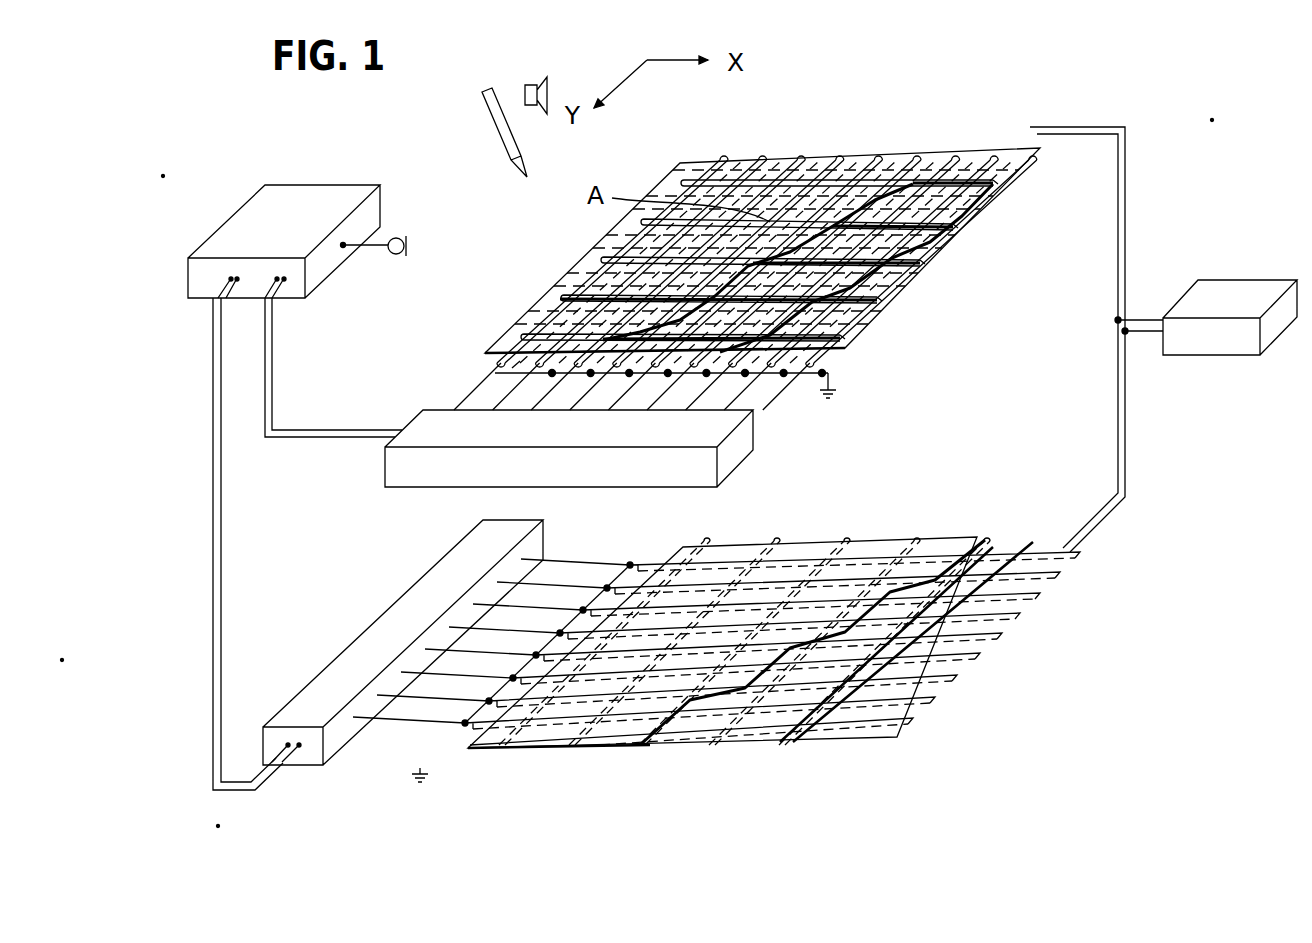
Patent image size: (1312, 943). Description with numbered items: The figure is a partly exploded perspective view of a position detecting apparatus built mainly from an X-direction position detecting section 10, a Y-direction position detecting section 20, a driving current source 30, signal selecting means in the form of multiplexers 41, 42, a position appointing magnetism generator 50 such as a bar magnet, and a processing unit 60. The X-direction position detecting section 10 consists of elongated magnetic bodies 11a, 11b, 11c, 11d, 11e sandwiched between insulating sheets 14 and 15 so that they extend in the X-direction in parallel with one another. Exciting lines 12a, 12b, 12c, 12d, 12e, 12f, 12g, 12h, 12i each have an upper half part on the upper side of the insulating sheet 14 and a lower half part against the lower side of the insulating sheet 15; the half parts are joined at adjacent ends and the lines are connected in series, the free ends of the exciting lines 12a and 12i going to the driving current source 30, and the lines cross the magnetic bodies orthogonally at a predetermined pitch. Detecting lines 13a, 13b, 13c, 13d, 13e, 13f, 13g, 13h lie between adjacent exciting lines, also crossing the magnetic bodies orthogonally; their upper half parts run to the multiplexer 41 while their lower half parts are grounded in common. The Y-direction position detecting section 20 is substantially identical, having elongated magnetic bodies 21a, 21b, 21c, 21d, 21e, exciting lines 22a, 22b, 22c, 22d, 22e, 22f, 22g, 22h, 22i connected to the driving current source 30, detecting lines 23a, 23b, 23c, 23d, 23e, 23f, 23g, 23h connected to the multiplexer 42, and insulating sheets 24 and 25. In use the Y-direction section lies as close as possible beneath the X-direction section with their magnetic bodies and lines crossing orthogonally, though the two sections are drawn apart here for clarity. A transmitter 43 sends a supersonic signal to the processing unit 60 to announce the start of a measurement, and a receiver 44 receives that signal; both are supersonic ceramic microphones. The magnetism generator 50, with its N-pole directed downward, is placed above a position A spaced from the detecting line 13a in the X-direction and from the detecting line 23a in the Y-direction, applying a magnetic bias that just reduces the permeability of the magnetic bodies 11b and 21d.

The X-direction position detecting section 10 is at (990, 118).
The elongated magnetic body 11a is at (998, 185).
The elongated magnetic body 11b is at (958, 228).
The elongated magnetic body 11c is at (925, 263).
The elongated magnetic body 11d is at (882, 301).
The elongated magnetic body 11e is at (845, 339).
The exciting line 12a is at (720, 157).
The exciting line 12b is at (761, 152).
The exciting line 12c is at (801, 155).
The exciting line 12d is at (840, 155).
The exciting line 12e is at (879, 155).
The exciting line 12f is at (918, 155).
The exciting line 12g is at (957, 155).
The exciting line 12h is at (999, 156).
The exciting line 12i is at (1037, 164).
The detecting line 13a is at (512, 368).
The detecting line 13b is at (552, 373).
The detecting line 13c is at (590, 373).
The detecting line 13d is at (629, 373).
The detecting line 13e is at (667, 375).
The detecting line 13f is at (706, 375).
The detecting line 13g is at (833, 396).
The detecting line 13h is at (826, 374).
The insulating sheet 14 is at (540, 300).
The insulating sheet 15 is at (990, 212).
The Y-direction position detecting section 20 is at (944, 503).
The elongated magnetic body 21a is at (782, 748).
The elongated magnetic body 21b is at (712, 748).
The elongated magnetic body 21c is at (642, 748).
The elongated magnetic body 21d is at (572, 748).
The elongated magnetic body 21e is at (502, 748).
The exciting line 22a is at (1076, 550).
The exciting line 22b is at (1065, 572).
The exciting line 22c is at (1045, 594).
The exciting line 22d is at (1025, 614).
The exciting line 22e is at (1007, 634).
The exciting line 22f is at (985, 654).
The exciting line 22g is at (962, 676).
The exciting line 22h is at (940, 698).
The exciting line 22i is at (870, 742).
The detecting line 23a is at (630, 565).
The detecting line 23b is at (607, 588).
The detecting line 23c is at (583, 610).
The detecting line 23d is at (560, 633).
The detecting line 23e is at (536, 655).
The detecting line 23f is at (513, 678).
The detecting line 23g is at (489, 701).
The detecting line 23h is at (465, 723).
The insulating sheet 24 is at (832, 540).
The insulating sheet 25 is at (712, 745).
The driving current source 30 is at (1240, 280).
The multiplexer 41 is at (753, 455).
The multiplexer 42 is at (415, 590).
The transmitter 43 is at (527, 82).
The receiver 44 is at (397, 256).
The position appointing magnetism generator 50 is at (493, 130).
The processing unit 60 is at (308, 186).